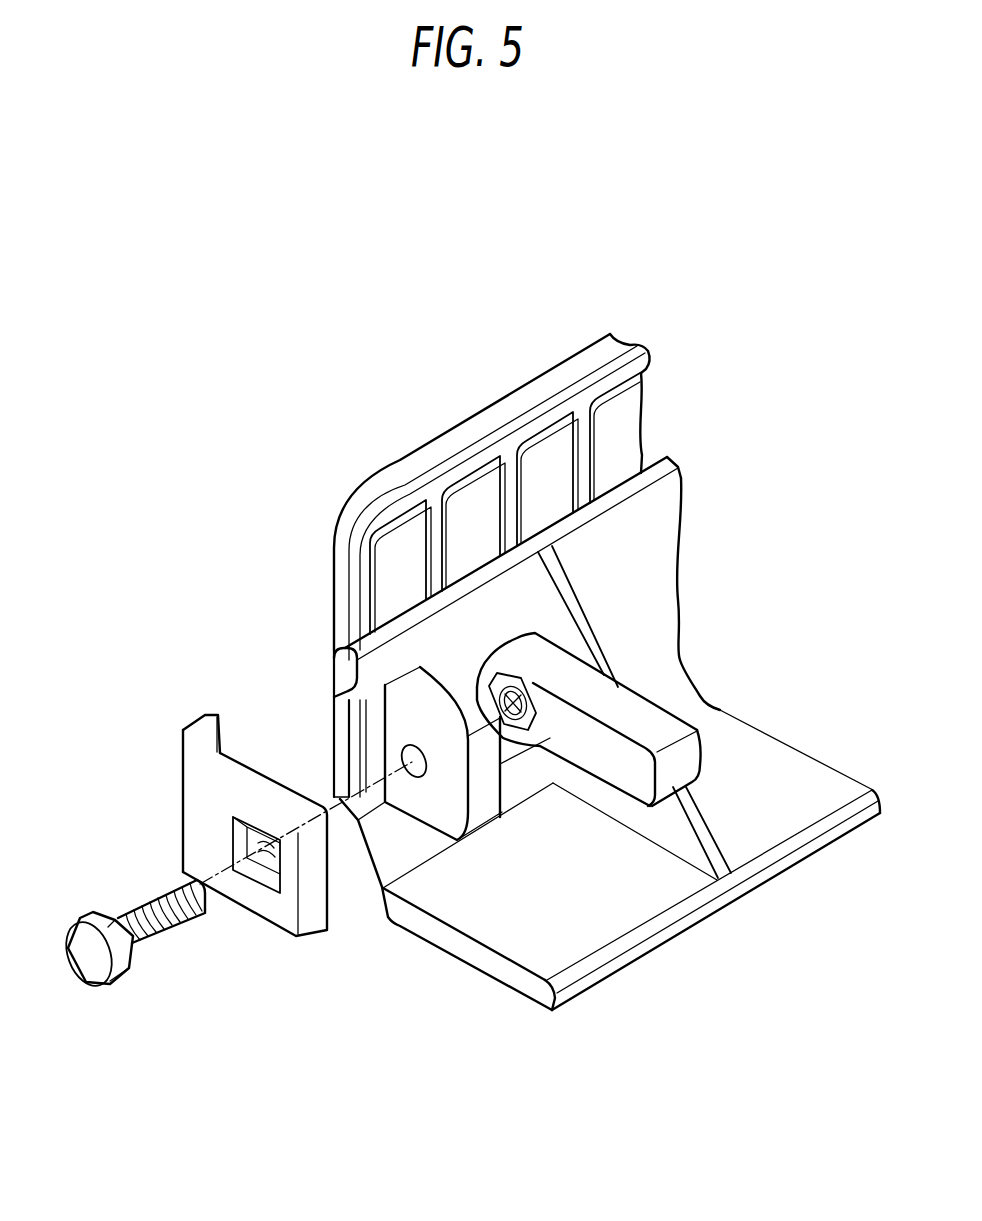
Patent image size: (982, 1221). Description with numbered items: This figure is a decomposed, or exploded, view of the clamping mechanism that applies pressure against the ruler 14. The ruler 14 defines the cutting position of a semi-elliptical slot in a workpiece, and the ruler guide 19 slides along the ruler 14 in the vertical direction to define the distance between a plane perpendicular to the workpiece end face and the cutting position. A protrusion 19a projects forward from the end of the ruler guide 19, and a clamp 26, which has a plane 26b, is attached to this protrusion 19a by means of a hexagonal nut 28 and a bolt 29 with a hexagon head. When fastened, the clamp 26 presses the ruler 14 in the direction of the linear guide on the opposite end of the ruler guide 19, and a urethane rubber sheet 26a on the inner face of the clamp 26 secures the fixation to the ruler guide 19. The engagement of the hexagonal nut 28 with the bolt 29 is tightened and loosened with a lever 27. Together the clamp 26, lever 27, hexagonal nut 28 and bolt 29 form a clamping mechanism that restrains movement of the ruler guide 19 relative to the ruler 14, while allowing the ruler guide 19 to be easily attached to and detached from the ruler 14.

The ruler 14 is at (473, 428).
The ruler guide 19 is at (613, 924).
The protrusion 19a is at (455, 827).
The clamp 26 is at (200, 820).
The urethane rubber sheet 26a is at (222, 713).
The plane 26b is at (332, 816).
The lever 27 is at (645, 710).
The hexagonal nut 28 is at (519, 682).
The bolt 29 is at (123, 963).